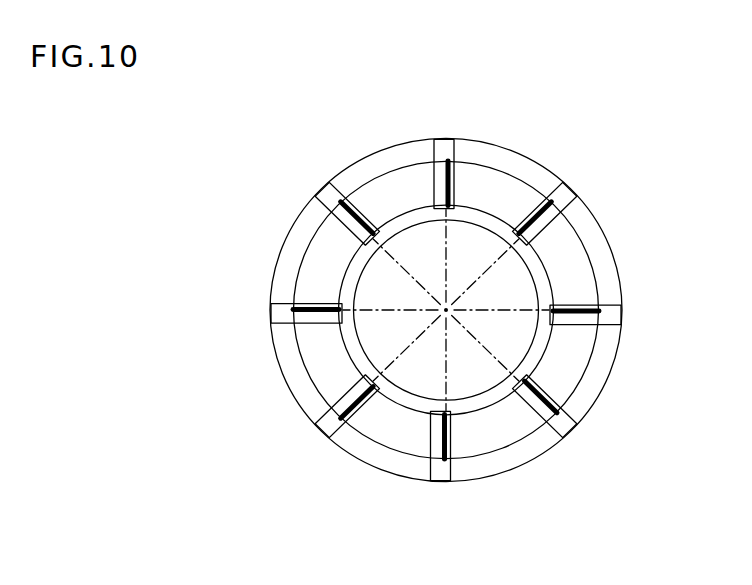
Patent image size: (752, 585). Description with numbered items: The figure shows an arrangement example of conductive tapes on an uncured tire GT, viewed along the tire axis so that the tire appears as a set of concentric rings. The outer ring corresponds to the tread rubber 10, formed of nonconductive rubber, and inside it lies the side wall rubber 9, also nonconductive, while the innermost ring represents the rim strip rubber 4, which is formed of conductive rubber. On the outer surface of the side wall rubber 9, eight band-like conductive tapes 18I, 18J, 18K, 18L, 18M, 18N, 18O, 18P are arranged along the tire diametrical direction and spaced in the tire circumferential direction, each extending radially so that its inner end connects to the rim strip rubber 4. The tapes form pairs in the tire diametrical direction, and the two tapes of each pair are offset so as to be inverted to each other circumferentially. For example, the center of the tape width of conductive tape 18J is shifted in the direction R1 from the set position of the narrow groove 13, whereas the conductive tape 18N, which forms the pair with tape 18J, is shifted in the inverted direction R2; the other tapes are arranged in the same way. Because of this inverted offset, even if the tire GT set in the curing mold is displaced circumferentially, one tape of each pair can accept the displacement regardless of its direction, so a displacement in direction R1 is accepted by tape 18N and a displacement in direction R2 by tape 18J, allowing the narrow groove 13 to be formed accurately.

The rim strip rubber 4 is at (413, 402).
The side wall rubber 9 is at (396, 183).
The tread rubber 10 is at (533, 151).
The narrow groove 13 is at (552, 232).
The conductive tape 18I is at (456, 146).
The conductive tape 18J is at (567, 203).
The conductive tape 18K is at (607, 328).
The conductive tape 18L is at (553, 440).
The conductive tape 18M is at (428, 476).
The conductive tape 18N is at (313, 415).
The conductive tape 18O is at (283, 328).
The conductive tape 18P is at (316, 197).
The uncured tire GT is at (243, 284).
The direction R1 is at (605, 185).
The direction R2 is at (340, 485).